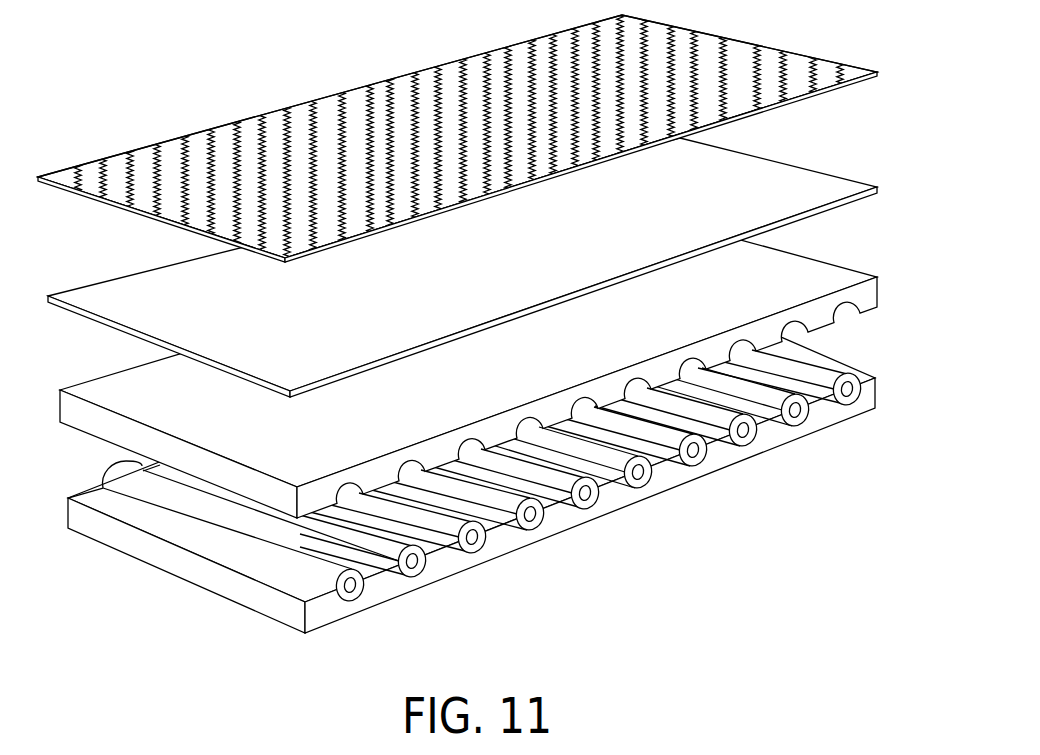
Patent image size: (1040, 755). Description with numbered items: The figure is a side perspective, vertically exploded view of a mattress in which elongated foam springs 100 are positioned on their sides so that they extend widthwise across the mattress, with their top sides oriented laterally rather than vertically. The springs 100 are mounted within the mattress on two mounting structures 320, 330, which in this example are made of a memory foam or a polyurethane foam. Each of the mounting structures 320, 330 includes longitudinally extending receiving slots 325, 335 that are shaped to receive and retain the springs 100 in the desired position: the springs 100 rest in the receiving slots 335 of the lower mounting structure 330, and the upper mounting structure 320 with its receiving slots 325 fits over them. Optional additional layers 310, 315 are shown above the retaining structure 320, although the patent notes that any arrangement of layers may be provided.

The elongated foam springs 100 is at (512, 497).
The top layer 310 is at (879, 73).
The top layer 315 is at (881, 188).
The mounting structure 320 is at (507, 366).
The receiving slots 325 is at (859, 319).
The mounting structure 330 is at (878, 398).
The receiving slots 335 is at (797, 430).